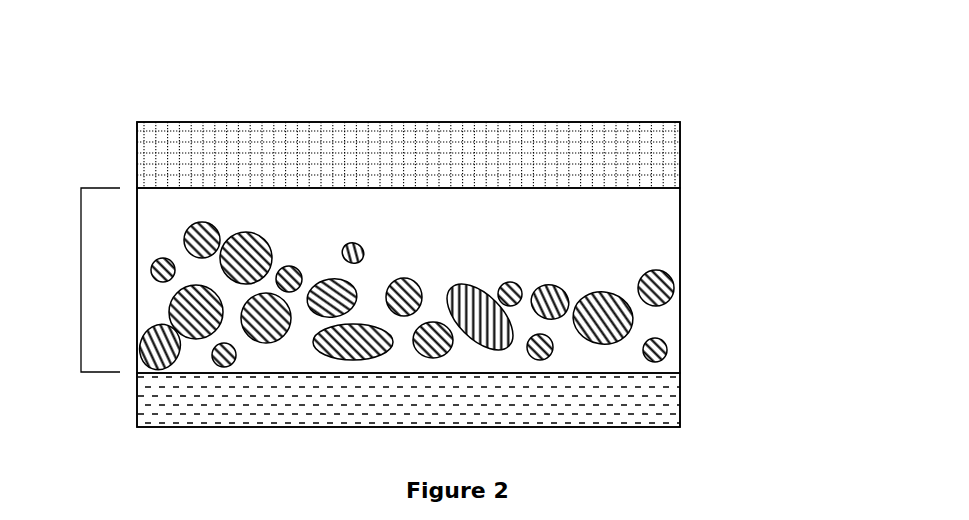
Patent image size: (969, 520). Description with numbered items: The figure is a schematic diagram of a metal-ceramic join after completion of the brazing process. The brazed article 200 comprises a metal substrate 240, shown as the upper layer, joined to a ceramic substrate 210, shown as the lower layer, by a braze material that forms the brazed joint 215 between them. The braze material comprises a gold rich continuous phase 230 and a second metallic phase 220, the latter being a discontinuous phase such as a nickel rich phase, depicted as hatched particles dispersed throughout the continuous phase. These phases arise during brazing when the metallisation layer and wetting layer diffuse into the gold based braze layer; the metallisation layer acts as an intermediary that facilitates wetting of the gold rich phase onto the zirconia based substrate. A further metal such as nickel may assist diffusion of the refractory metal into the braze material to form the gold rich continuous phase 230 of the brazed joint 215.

The brazed article 200 is at (662, 93).
The brazed joint 215 is at (90, 188).
The metal substrate 240 is at (680, 150).
The gold rich continuous phase 230 is at (680, 235).
The second metallic phase 220 is at (660, 305).
The ceramic substrate 210 is at (680, 385).